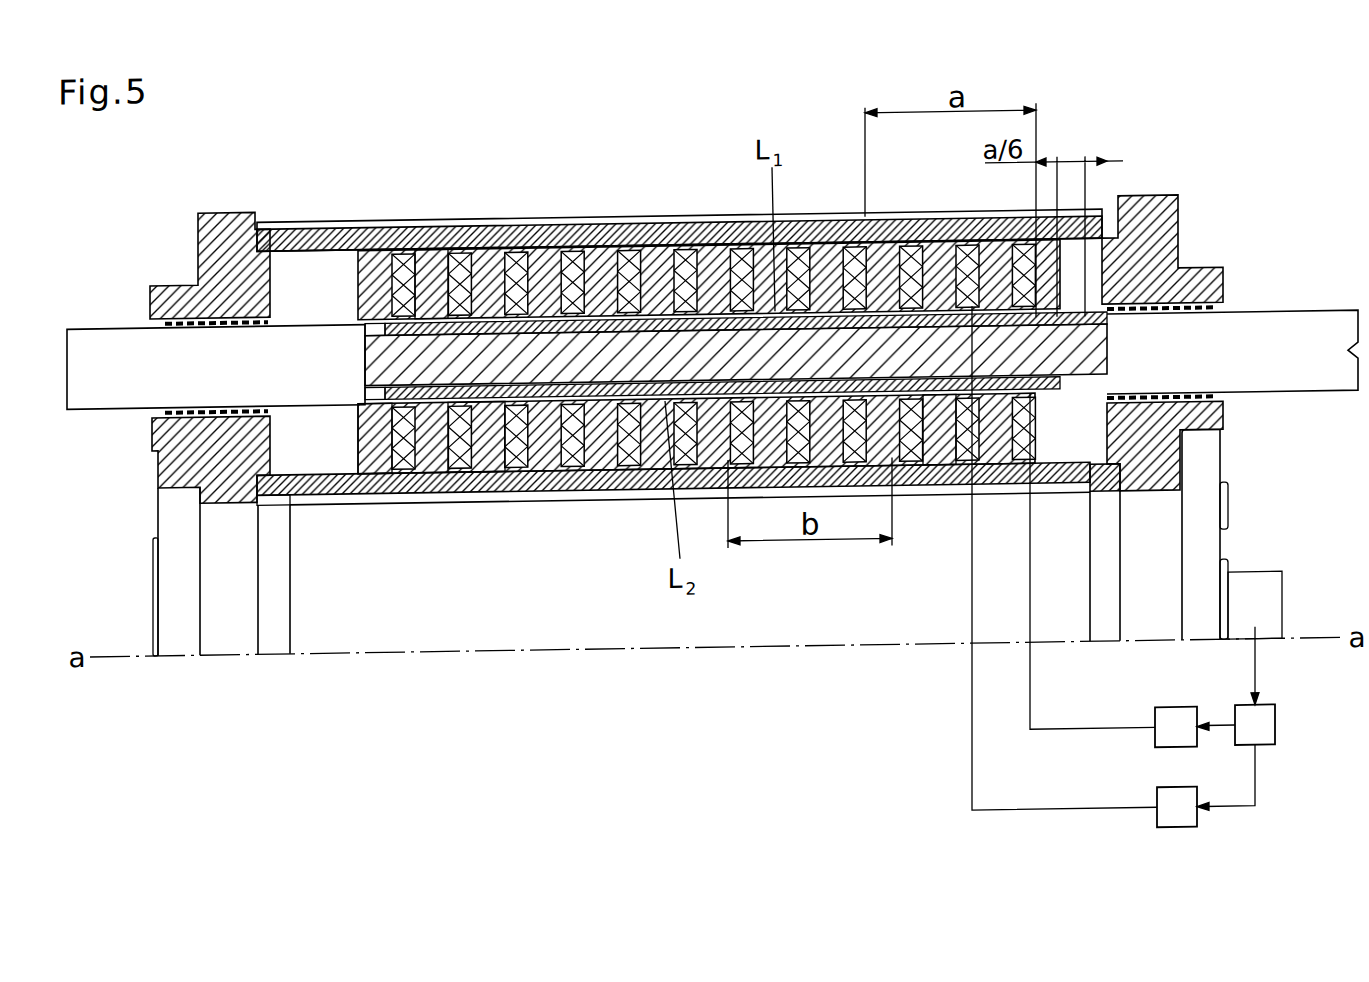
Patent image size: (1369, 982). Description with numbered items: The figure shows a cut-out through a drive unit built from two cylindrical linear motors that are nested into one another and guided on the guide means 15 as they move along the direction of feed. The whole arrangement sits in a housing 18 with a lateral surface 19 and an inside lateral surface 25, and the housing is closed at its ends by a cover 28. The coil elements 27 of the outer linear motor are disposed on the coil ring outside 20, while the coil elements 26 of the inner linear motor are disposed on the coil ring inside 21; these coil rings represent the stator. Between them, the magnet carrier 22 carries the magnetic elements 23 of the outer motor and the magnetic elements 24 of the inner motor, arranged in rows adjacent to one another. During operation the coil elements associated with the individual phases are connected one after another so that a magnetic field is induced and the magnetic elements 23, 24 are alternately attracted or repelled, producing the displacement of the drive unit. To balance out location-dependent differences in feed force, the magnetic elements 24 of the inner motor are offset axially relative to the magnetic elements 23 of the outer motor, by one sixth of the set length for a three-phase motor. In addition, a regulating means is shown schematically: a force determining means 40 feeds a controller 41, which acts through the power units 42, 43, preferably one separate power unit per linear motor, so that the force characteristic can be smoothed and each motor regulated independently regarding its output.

The guide means 15 is at (100, 385).
The housing 18 is at (567, 229).
The lateral surface 19 is at (273, 241).
The coil ring outside 20 is at (485, 271).
The coil ring inside 21 is at (603, 465).
The magnet carrier 22 is at (365, 366).
The magnetic element 23 is at (432, 308).
The magnetic element 24 is at (952, 478).
The inside lateral surface 25 is at (360, 483).
The coil element 26 is at (510, 490).
The coil element 27 is at (738, 268).
The cover 28 is at (213, 253).
The force determining means 40 is at (1267, 616).
The regulating means 41 is at (1240, 755).
The power unit 42 is at (1119, 569).
The power unit 43 is at (1090, 566).